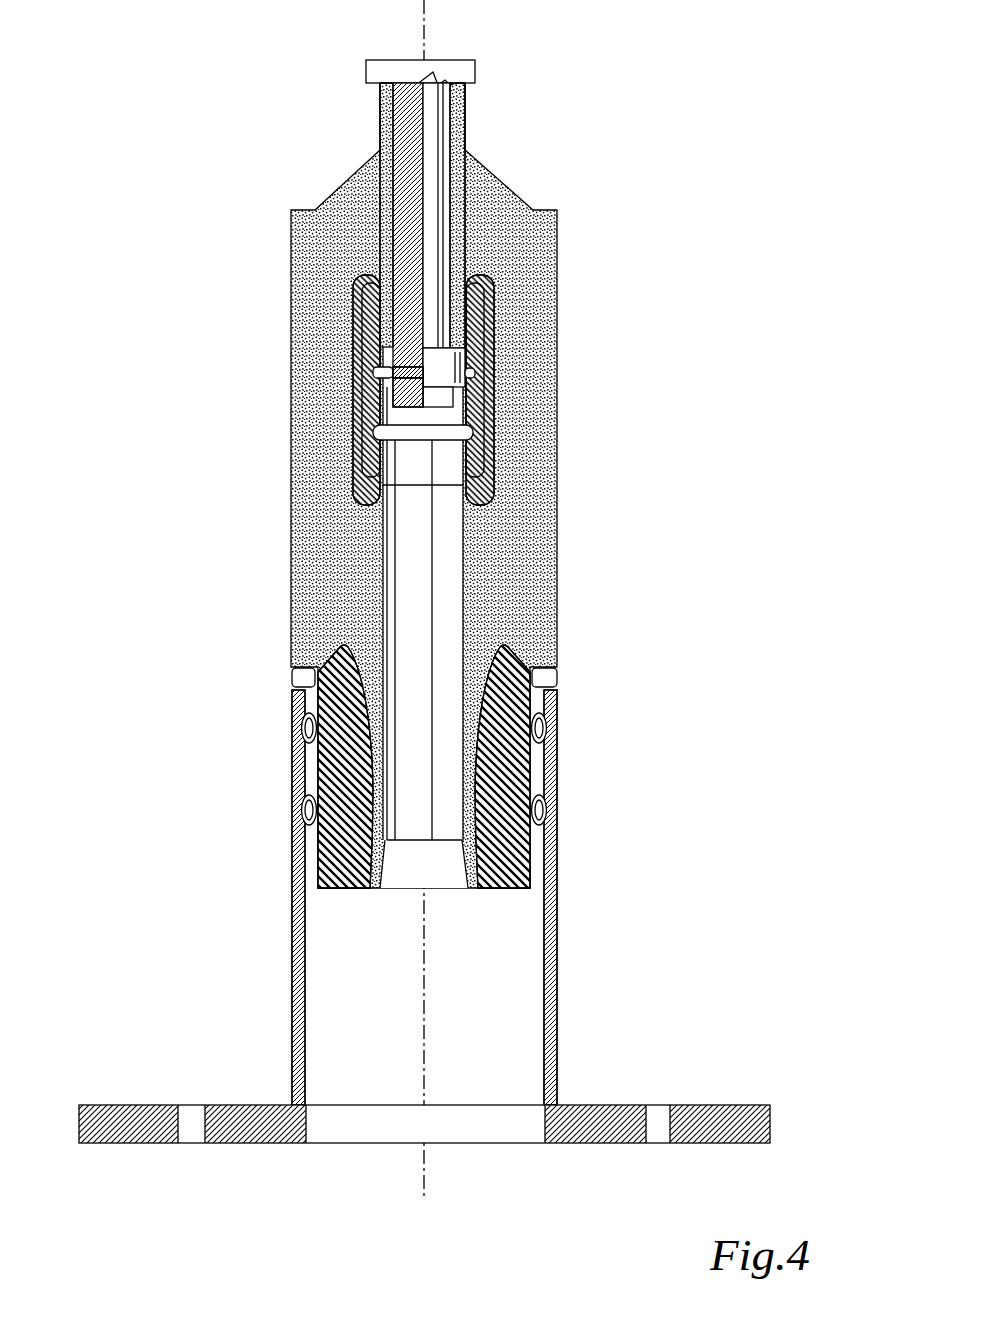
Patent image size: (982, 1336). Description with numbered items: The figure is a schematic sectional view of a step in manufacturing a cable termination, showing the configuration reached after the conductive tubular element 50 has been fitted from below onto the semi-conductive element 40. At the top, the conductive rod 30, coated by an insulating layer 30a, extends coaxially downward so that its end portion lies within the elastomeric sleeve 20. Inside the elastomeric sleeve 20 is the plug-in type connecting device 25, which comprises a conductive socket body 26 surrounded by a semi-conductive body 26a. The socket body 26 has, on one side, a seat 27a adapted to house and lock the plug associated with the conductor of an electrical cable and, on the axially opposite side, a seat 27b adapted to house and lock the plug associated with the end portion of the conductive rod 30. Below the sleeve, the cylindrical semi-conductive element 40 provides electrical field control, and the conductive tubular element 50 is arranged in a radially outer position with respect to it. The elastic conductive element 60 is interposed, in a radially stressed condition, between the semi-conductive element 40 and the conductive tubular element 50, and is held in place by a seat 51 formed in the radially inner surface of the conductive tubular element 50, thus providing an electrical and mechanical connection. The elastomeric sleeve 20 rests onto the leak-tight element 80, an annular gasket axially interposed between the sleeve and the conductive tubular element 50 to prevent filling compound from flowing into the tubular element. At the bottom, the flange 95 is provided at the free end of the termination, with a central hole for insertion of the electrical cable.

The elastomeric sleeve 20 is at (505, 552).
The connecting device 25 is at (517, 315).
The socket body 26 is at (468, 382).
The semi-conductive body 26a is at (493, 482).
The seat 27a is at (390, 440).
The seat 27b is at (372, 338).
The conductive rod 30 is at (435, 190).
The insulating layer 30a is at (380, 118).
The semi-conductive element 40 is at (558, 692).
The conductive tubular element 50 is at (557, 955).
The seat 51 is at (292, 728).
The elastic conductive element 60 is at (540, 728).
The leak-tight element 80 is at (300, 677).
The flange 95 is at (128, 1125).